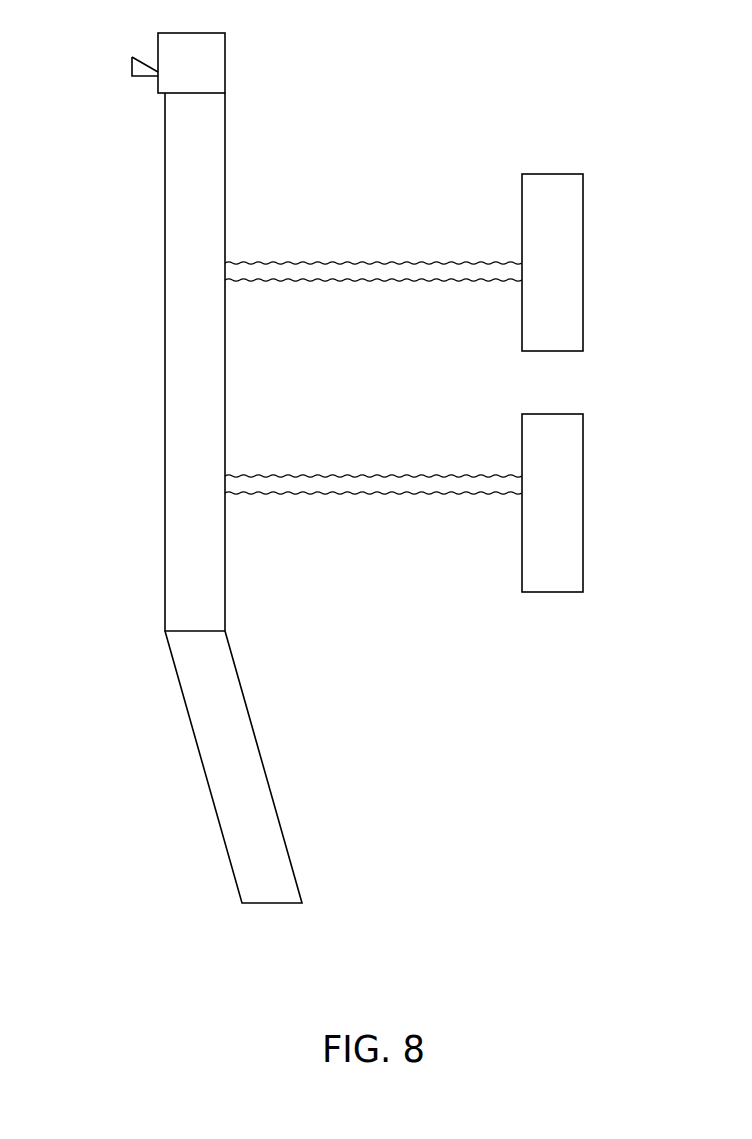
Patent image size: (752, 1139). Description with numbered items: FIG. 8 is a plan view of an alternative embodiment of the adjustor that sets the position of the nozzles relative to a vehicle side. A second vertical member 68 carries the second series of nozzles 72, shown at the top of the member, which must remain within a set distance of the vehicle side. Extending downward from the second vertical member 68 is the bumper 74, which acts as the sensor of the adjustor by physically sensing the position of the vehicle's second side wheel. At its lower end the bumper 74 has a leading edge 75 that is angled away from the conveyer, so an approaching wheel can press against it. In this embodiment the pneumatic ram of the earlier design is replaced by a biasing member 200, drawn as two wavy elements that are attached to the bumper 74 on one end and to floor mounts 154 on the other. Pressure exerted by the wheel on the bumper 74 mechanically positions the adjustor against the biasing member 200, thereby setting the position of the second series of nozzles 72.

The second vertical member 68 is at (208, 58).
The second series of nozzles 72 is at (140, 67).
The bumper 74 is at (183, 402).
The leading edge 75 is at (213, 706).
The biasing member 200 is at (374, 275).
The floor mounts 154 is at (558, 292).